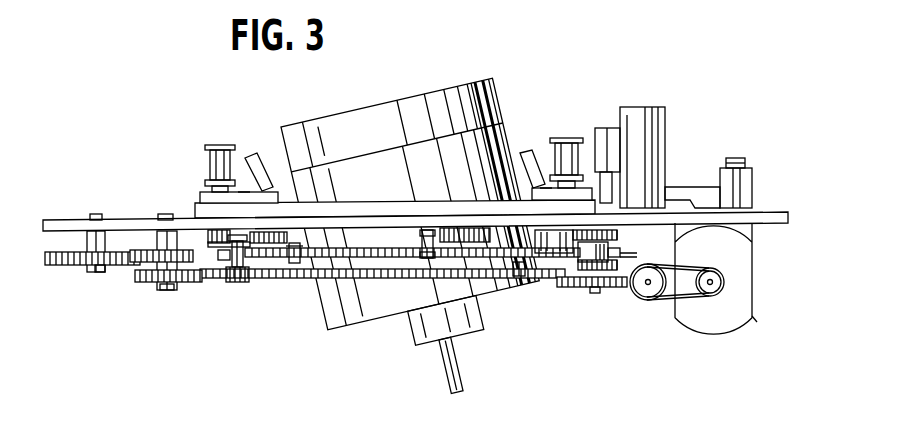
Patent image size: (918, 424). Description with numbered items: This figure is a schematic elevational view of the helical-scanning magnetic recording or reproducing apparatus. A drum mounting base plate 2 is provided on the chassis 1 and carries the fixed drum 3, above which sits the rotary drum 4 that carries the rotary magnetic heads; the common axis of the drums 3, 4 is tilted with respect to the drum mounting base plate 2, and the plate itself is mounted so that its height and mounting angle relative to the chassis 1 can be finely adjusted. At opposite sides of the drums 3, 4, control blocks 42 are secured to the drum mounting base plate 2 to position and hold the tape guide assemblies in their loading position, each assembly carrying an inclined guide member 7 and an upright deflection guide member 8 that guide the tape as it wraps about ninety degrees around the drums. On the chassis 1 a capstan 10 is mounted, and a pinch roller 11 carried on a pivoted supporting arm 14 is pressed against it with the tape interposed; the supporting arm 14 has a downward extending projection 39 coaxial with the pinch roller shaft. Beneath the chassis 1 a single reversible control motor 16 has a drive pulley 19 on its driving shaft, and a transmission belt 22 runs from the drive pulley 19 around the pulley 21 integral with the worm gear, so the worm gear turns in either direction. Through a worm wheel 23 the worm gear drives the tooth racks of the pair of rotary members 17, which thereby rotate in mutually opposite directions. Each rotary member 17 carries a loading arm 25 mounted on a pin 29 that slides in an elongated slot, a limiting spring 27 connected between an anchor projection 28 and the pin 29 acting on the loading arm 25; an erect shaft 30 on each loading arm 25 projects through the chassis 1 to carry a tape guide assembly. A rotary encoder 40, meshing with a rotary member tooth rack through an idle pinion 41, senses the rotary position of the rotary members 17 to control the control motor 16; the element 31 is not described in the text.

The chassis 1 is at (771, 212).
The drum mounting base plate 2 is at (346, 208).
The fixed drum 3 is at (418, 163).
The rotary drum 4 is at (488, 88).
The inclined guide member 7 is at (266, 153).
The deflection guide member 8 is at (206, 152).
The capstan 10 is at (655, 128).
The pinch roller 11 is at (606, 128).
The supporting arm 14 is at (700, 187).
The control motor 16 is at (737, 265).
The rotary member 17 is at (348, 258).
The drive pulley 19 is at (750, 316).
The pulley 21 is at (653, 292).
The transmission belt 22 is at (705, 298).
The worm wheel 23 is at (612, 288).
The loading arm 25 is at (543, 267).
The limiting spring 27 is at (264, 247).
The anchor projection 28 is at (293, 262).
The pin 29 is at (237, 284).
The erect shaft 30 is at (212, 232).
The pin 31 is at (637, 255).
The downward extending projection 39 is at (622, 247).
The rotary encoder 40 is at (76, 268).
The idle pinion 41 is at (158, 284).
The control block 42 is at (239, 192).